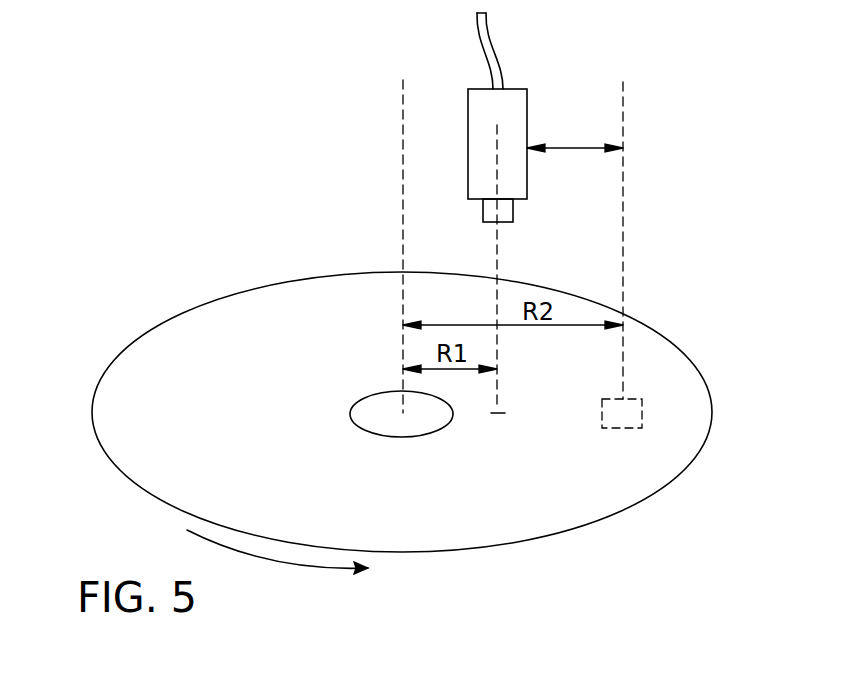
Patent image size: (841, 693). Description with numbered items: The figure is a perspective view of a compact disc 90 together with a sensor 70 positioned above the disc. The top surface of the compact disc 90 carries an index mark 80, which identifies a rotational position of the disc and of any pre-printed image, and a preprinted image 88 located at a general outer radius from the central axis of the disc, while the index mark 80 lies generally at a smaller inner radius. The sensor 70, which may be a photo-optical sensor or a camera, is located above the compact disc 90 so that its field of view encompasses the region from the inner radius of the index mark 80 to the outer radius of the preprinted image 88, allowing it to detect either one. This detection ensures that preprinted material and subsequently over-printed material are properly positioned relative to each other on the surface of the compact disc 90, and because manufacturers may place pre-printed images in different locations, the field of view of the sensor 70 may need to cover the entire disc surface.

The sensor 70 is at (523, 89).
The index mark 80 is at (507, 408).
The preprinted image 88 is at (636, 398).
The rotating disk 90 is at (227, 308).